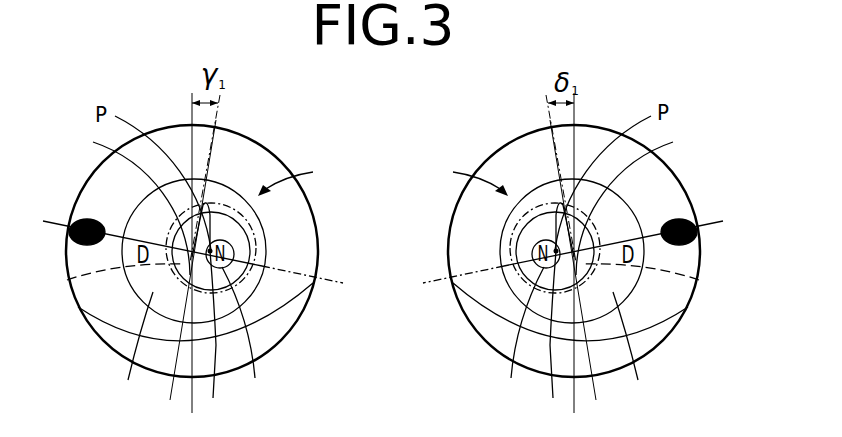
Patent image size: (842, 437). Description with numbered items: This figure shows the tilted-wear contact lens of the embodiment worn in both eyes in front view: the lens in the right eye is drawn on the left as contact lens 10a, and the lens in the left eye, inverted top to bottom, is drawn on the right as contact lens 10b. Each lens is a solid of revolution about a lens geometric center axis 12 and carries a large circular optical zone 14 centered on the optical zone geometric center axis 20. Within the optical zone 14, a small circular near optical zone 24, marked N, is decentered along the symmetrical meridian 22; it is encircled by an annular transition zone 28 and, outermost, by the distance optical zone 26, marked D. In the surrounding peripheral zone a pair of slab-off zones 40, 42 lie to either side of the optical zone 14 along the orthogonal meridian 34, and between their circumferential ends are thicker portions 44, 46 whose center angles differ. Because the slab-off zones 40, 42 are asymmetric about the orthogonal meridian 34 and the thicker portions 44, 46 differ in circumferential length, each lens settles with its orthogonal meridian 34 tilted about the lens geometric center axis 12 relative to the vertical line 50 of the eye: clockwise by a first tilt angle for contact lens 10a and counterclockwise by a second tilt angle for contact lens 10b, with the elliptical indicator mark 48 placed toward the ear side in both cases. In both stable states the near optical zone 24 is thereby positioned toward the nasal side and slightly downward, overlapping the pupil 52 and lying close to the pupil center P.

The contact lens worn in the right eye 10a is at (306, 112).
The contact lens worn in the left eye 10b is at (716, 112).
The lens geometric center axis 12 is at (382, 201).
The optical zone geometric center axis 20 is at (383, 208).
The optical zone 14 is at (383, 177).
The symmetrical meridian 22 is at (328, 278).
The near optical zone 24 is at (383, 335).
The distance optical zone 26 is at (381, 347).
The transition zone 28 is at (382, 336).
The orthogonal meridian 34 is at (220, 124).
The slab-off zone 40 is at (405, 260).
The slab-off zone 42 is at (117, 338).
The thicker portion 44 is at (103, 188).
The thicker portion 46 is at (316, 285).
The indicator mark 48 is at (78, 220).
The vertical line of the eye 50 is at (188, 114).
The pupil 52 is at (78, 287).